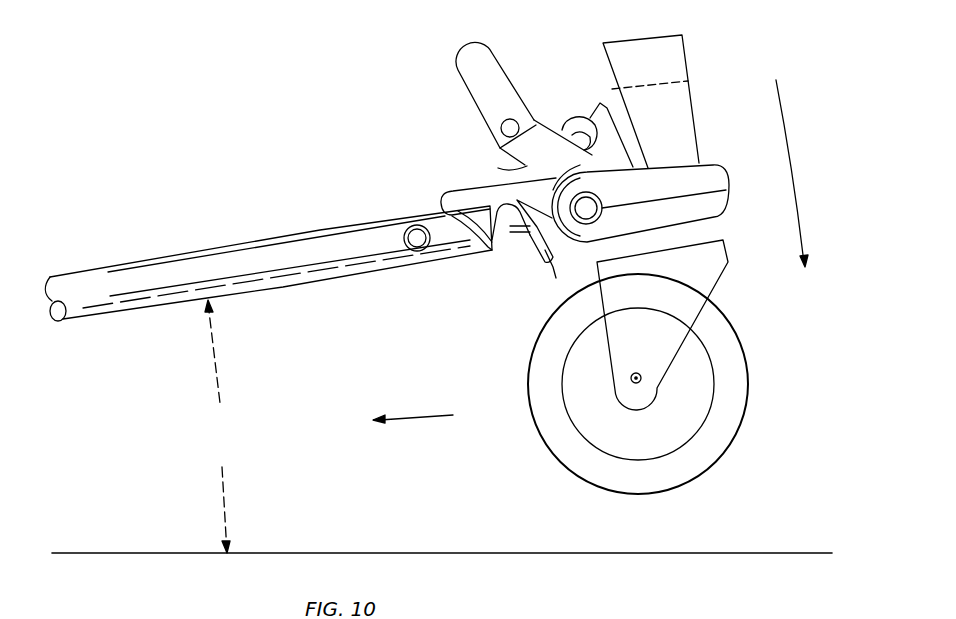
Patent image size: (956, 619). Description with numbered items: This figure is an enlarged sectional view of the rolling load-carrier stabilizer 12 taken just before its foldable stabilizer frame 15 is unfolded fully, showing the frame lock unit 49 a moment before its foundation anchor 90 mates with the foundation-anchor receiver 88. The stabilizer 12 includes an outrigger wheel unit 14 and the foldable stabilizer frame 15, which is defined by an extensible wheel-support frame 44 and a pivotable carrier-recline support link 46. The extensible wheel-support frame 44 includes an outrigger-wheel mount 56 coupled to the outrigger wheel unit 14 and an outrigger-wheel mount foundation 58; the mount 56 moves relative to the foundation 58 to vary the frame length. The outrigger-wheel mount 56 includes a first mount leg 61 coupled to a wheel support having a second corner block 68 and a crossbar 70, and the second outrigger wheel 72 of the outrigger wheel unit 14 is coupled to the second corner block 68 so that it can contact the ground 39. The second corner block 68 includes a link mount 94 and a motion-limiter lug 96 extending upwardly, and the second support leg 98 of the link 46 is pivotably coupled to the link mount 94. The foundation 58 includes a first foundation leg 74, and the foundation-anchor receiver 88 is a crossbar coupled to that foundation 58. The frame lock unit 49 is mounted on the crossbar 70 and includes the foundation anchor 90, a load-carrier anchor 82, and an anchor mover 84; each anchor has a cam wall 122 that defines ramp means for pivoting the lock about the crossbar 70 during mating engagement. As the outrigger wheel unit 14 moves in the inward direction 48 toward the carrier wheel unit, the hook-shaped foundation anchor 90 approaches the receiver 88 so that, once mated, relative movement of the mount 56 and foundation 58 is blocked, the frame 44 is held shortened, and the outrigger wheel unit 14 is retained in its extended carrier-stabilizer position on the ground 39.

The rolling load-carrier stabilizer 12 is at (257, 206).
The outrigger wheel unit 14 is at (757, 297).
The foldable stabilizer frame 15 is at (402, 117).
The ground 39 is at (119, 552).
The extensible wheel-support frame 44 is at (280, 300).
The pivotable carrier-recline support link 46 is at (529, 97).
The inward direction 48 is at (418, 417).
The frame lock unit 49 is at (722, 147).
The outrigger-wheel mount 56 is at (526, 259).
The outrigger-wheel mount foundation 58 is at (347, 291).
The first mount leg 61 is at (560, 254).
The second corner block 68 is at (706, 82).
The crossbar 70 is at (598, 216).
The second outrigger wheel 72 is at (550, 487).
The first foundation leg 74 is at (170, 273).
The load-carrier anchor 82 is at (590, 113).
The anchor mover 84 is at (745, 206).
The foundation-anchor receiver 88 is at (410, 255).
The foundation anchor 90 is at (443, 227).
The link mount 94 is at (470, 193).
The motion-limiter lug 96 is at (660, 58).
The second support leg 98 is at (470, 94).
The cam wall 122 is at (467, 235).